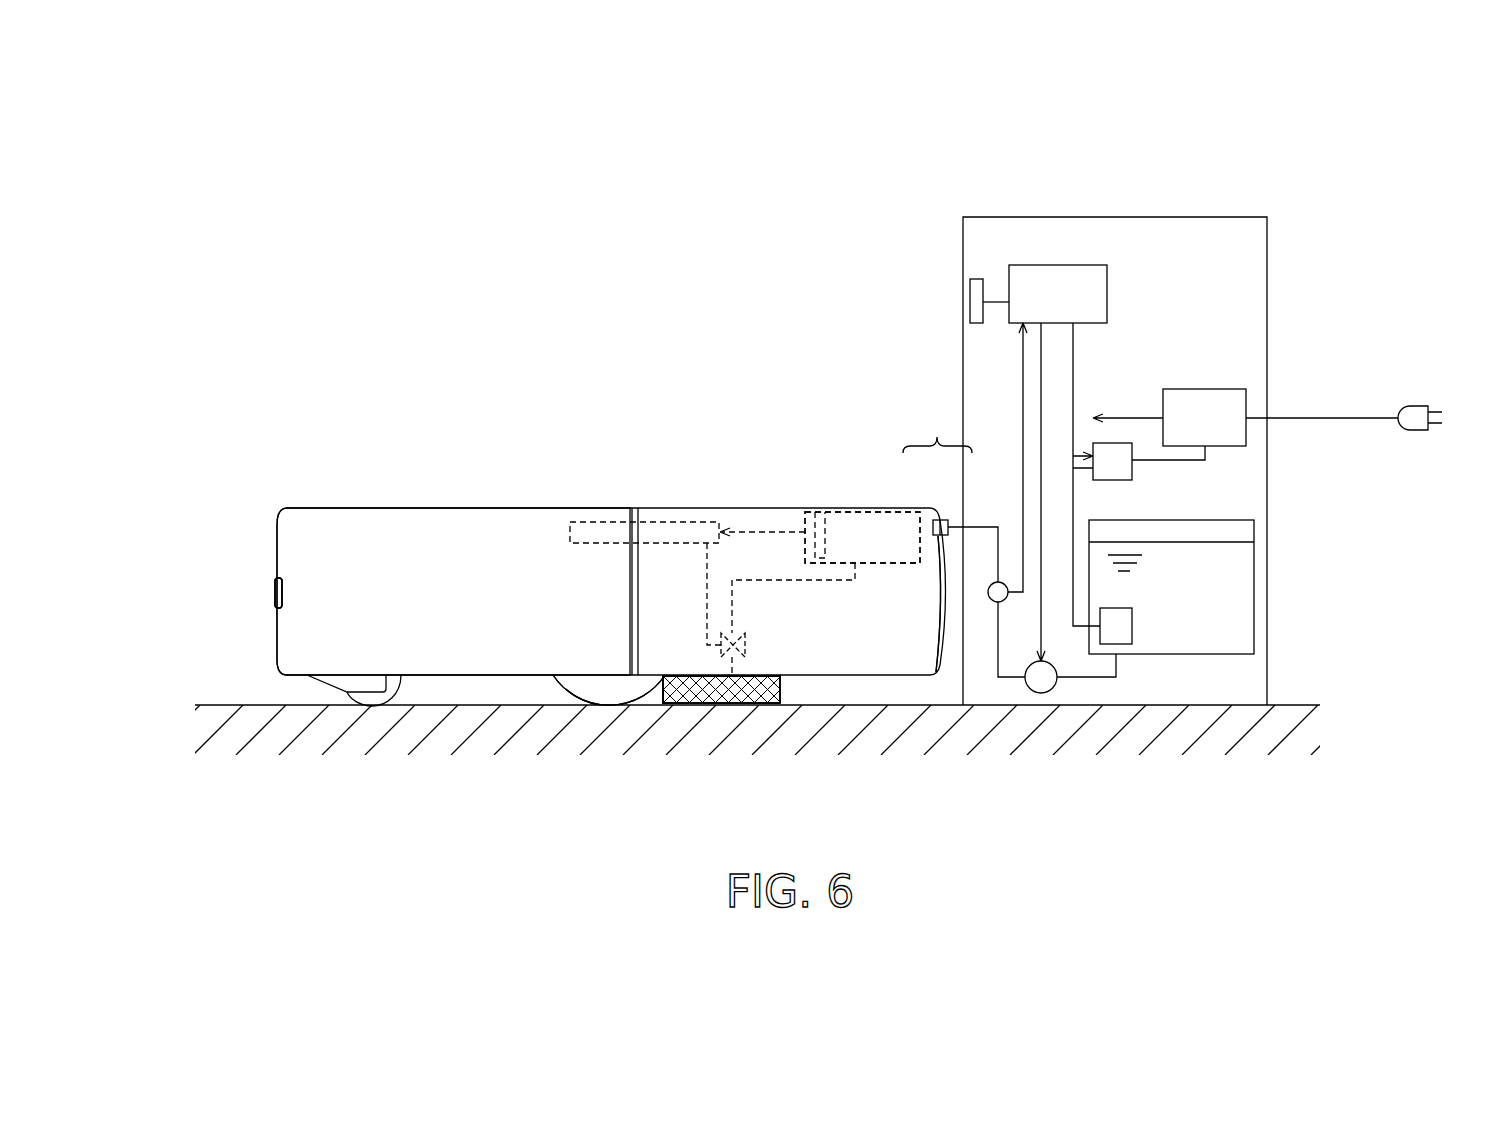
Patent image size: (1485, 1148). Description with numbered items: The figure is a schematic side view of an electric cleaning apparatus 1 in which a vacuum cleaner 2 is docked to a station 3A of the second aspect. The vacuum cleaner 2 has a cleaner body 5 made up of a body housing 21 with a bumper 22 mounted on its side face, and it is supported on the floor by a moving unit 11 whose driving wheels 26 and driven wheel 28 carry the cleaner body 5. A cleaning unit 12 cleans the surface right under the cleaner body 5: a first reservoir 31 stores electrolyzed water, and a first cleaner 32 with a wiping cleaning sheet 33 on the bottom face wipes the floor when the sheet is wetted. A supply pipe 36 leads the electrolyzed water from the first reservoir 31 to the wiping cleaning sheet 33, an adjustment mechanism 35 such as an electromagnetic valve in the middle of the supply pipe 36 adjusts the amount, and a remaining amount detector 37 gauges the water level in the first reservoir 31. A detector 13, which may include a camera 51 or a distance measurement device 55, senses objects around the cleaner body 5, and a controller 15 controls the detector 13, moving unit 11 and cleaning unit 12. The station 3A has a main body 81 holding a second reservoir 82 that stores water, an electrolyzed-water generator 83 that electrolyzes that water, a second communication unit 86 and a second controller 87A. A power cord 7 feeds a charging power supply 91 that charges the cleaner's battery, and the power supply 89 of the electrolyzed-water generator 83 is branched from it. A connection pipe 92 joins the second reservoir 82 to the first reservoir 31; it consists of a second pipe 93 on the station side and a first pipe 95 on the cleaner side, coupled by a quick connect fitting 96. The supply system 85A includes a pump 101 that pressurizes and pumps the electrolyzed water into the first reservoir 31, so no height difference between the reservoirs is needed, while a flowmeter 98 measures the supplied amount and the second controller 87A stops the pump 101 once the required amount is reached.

The electric cleaning apparatus 1 is at (913, 148).
The vacuum cleaner 2 is at (616, 477).
The station 3A is at (1278, 185).
The cleaner body 5 is at (801, 493).
The power cord 7 is at (1376, 420).
The moving unit 11 is at (562, 701).
The cleaning unit 12 is at (764, 717).
The detector 13 is at (277, 592).
The controller 15 is at (688, 522).
The body housing 21 is at (765, 520).
The bumper 22 is at (490, 540).
The driving wheels 26 is at (618, 697).
The driven wheel 28 is at (372, 706).
The first reservoir 31 is at (885, 563).
The first cleaner 32 is at (743, 705).
The wiping cleaning sheet 33 is at (727, 783).
The adjustment mechanism 35 is at (746, 656).
The supply pipe 36 is at (820, 580).
The remaining amount detector 37 is at (824, 512).
The camera 51 is at (277, 592).
The distance measurement device 55 is at (277, 592).
The main body 81 is at (1267, 272).
The second reservoir 82 is at (1254, 590).
The electrolyzed-water generator 83 is at (1132, 628).
The supply system 85A is at (1107, 692).
The second communication unit 86 is at (980, 278).
The second controller 87A is at (1068, 265).
The power supply 89 is at (1132, 472).
The charging power supply 91 is at (1246, 404).
The connection pipe 92 is at (937, 432).
The second pipe 93 is at (973, 525).
The first pipe 95 is at (933, 520).
The quick connect fitting 96 is at (938, 668).
The flowmeter 98 is at (993, 601).
The pump 101 is at (1041, 693).